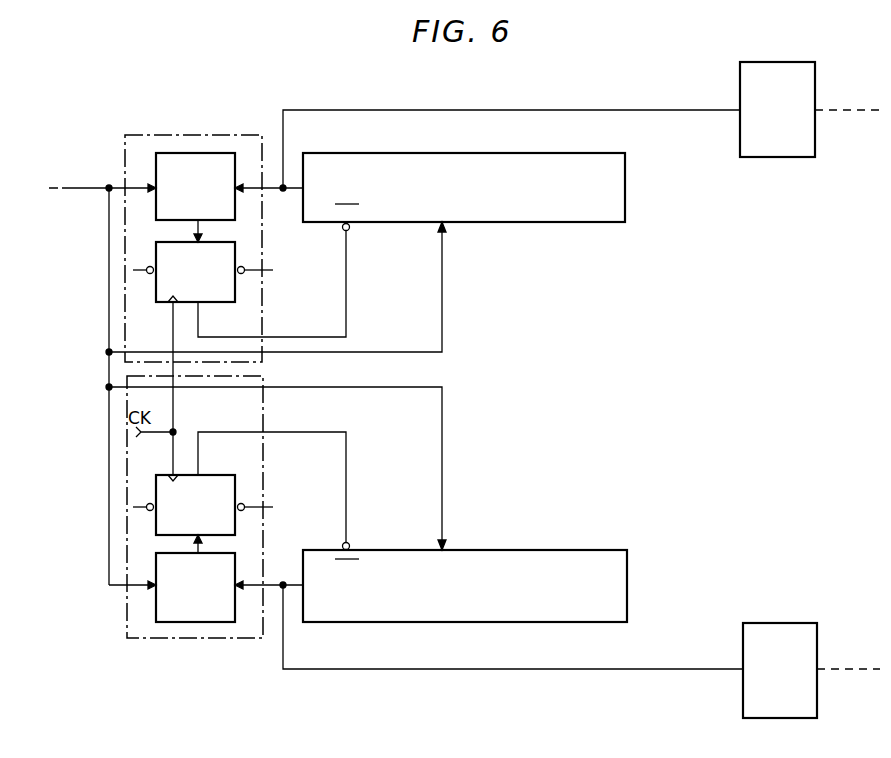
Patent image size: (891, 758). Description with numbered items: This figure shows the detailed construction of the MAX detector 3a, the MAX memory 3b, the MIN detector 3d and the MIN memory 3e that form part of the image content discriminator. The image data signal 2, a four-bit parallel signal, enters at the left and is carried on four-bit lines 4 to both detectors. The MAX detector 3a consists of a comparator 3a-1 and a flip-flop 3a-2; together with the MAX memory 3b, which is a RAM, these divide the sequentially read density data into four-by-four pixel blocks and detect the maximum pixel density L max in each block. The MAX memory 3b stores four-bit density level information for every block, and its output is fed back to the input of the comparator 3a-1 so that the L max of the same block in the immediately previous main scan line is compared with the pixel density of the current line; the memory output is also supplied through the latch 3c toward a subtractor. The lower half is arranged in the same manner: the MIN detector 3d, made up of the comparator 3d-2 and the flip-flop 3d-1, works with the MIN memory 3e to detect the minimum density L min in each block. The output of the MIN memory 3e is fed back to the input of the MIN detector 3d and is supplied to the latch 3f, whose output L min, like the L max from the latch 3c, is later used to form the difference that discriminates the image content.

The image data signal 2 is at (71, 186).
The signal bus line 4 is at (88, 192).
The MAX detector 3a is at (262, 238).
The comparator 3a-1 is at (202, 153).
The flip-flop 3a-2 is at (235, 298).
The MAX memory 3b is at (625, 180).
The latch 3c is at (815, 74).
The MIN detector 3d is at (263, 403).
The flip-flop 3d-1 is at (235, 475).
The comparator 3d-2 is at (235, 563).
The MIN memory 3e is at (627, 572).
The latch 3f is at (817, 690).